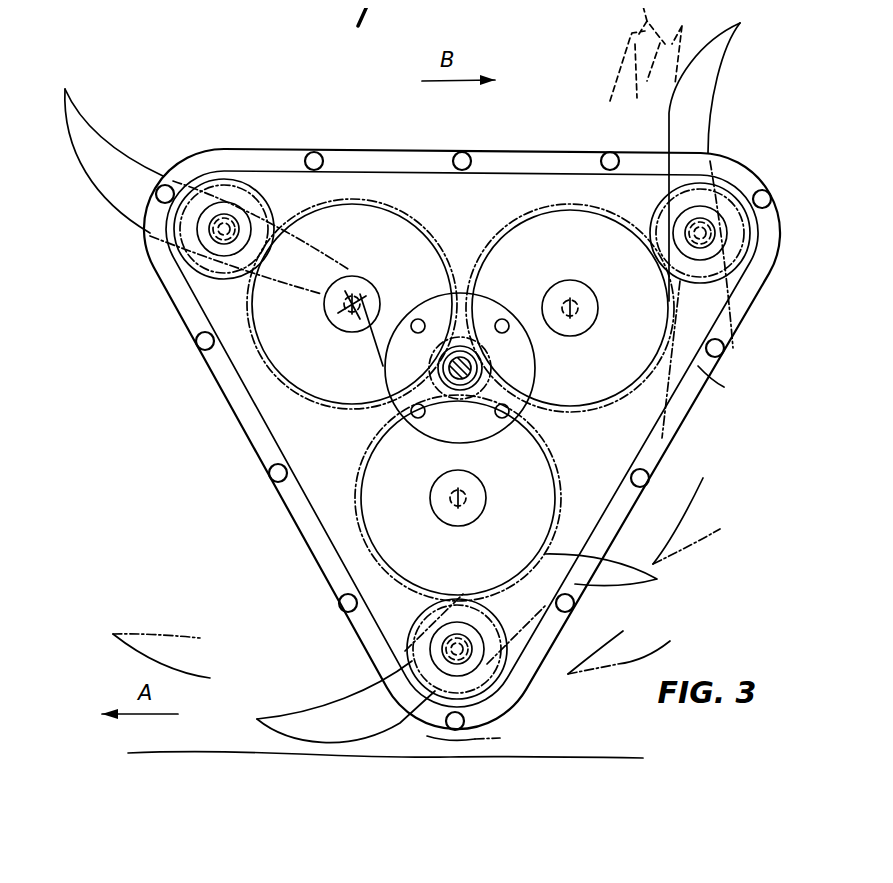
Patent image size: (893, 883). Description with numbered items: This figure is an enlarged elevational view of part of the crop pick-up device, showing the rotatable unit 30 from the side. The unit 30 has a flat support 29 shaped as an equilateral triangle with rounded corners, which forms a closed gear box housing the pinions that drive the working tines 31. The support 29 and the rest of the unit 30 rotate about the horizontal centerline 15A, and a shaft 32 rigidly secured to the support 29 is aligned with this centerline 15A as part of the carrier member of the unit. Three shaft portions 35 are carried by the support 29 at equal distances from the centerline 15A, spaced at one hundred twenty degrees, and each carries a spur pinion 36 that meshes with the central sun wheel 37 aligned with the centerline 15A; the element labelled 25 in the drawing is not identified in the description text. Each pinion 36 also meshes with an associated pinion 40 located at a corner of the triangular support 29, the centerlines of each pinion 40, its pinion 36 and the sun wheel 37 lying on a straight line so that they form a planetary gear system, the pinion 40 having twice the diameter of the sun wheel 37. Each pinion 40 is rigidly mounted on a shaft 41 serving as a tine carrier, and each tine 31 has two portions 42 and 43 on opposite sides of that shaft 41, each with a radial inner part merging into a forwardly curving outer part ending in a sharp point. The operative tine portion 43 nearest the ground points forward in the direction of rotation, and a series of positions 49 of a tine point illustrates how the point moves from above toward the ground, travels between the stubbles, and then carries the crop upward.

The centerline 15A is at (467, 365).
The pivot shaft 25 is at (338, 312).
The flat support 29 is at (397, 150).
The rotatable unit 30 is at (218, 425).
The tines 31 is at (100, 140).
The shaft 32 is at (462, 397).
The shaft portions 35 is at (445, 495).
The spur pinion 36 is at (325, 380).
The central pinion or sun wheel 37 is at (440, 345).
The pinion 40 is at (213, 273).
The shaft 41 is at (237, 215).
The tine portion 42 is at (110, 167).
The tine portion 43 is at (347, 270).
The positions of a tine point 49 is at (143, 630).